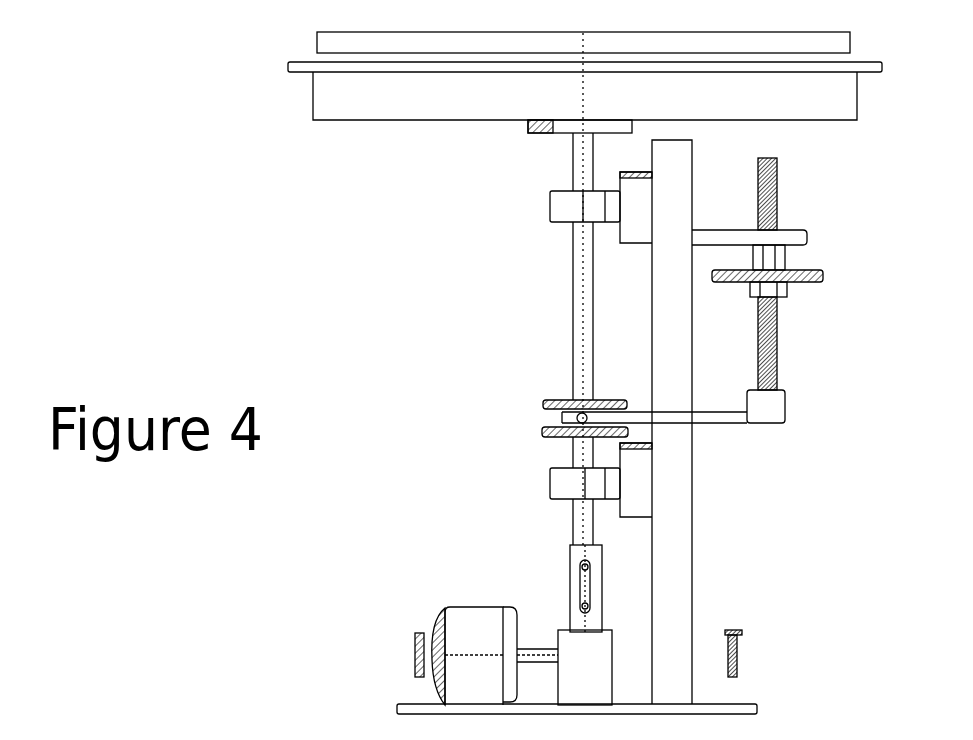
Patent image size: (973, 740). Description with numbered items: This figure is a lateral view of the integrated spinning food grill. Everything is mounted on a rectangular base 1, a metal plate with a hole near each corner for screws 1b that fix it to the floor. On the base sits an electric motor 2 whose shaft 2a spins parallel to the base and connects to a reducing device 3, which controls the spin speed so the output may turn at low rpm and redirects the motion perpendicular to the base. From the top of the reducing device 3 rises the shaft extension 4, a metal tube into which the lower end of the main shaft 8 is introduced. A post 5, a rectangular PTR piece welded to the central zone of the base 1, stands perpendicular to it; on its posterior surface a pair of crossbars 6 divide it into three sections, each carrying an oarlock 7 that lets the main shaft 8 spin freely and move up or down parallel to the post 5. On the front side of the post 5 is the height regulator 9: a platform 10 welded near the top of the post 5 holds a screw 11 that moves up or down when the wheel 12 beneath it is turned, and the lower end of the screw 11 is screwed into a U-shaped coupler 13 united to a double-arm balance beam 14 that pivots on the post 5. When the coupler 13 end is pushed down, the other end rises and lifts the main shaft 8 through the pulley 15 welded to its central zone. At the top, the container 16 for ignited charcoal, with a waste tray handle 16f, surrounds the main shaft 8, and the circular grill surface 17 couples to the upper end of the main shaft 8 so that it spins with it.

The rectangular base 1 is at (735, 701).
The screws 1b is at (414, 651).
The electric motor 2 is at (478, 603).
The shaft 2a is at (545, 631).
The reducing device 3 is at (598, 647).
The shaft extension 4 is at (592, 601).
The post 5 is at (676, 503).
The crossbars 6 is at (637, 236).
The oarlock 7 is at (548, 205).
The main shaft 8 is at (571, 280).
The height regulator 9 is at (818, 290).
The platform 10 is at (809, 232).
The screw 11 is at (780, 330).
The wheel 12 is at (722, 284).
The coupler 13 is at (787, 407).
The double-arm balance beam 14 is at (674, 410).
The pulley 15 is at (545, 424).
The container 16 is at (368, 120).
The handle 16f is at (545, 127).
The circular grill surface 17 is at (875, 42).